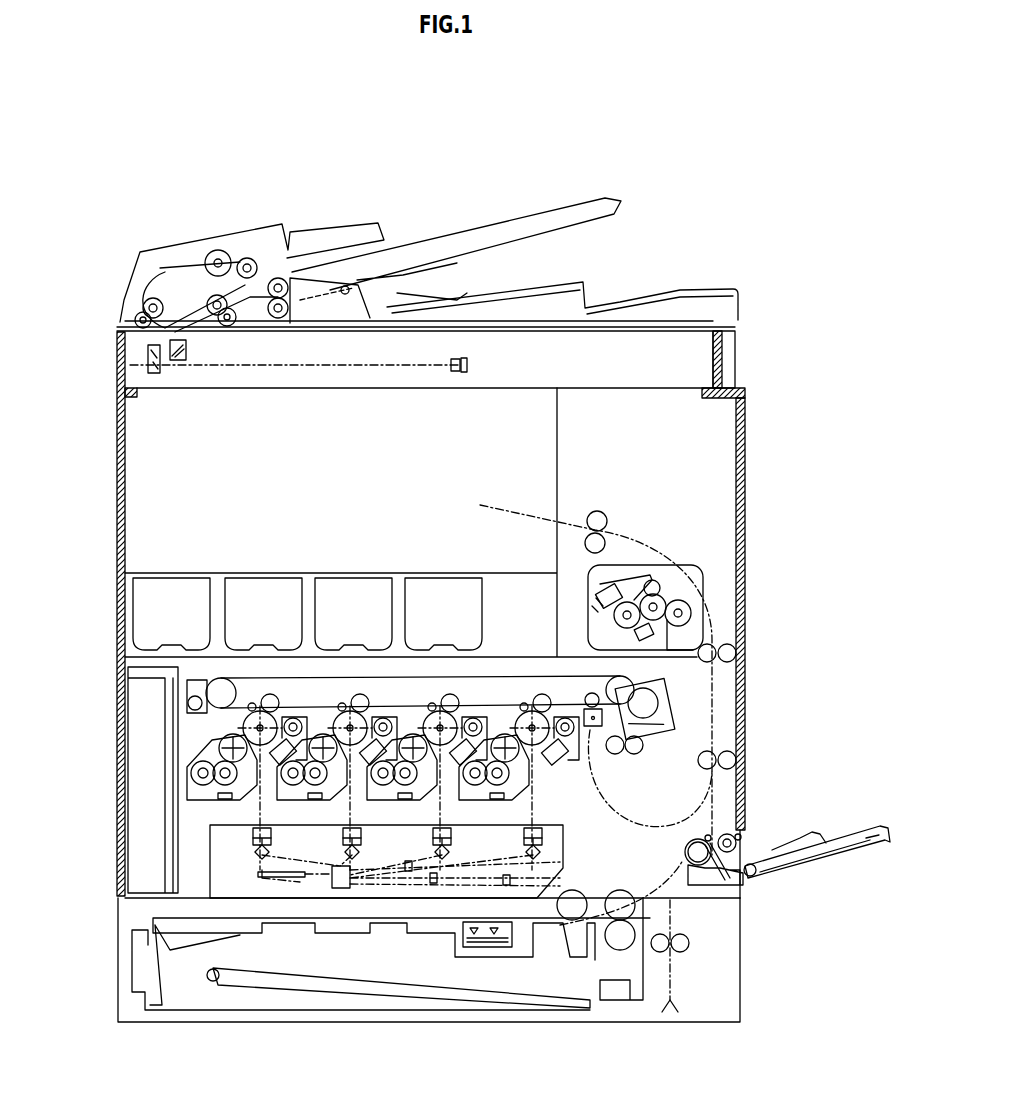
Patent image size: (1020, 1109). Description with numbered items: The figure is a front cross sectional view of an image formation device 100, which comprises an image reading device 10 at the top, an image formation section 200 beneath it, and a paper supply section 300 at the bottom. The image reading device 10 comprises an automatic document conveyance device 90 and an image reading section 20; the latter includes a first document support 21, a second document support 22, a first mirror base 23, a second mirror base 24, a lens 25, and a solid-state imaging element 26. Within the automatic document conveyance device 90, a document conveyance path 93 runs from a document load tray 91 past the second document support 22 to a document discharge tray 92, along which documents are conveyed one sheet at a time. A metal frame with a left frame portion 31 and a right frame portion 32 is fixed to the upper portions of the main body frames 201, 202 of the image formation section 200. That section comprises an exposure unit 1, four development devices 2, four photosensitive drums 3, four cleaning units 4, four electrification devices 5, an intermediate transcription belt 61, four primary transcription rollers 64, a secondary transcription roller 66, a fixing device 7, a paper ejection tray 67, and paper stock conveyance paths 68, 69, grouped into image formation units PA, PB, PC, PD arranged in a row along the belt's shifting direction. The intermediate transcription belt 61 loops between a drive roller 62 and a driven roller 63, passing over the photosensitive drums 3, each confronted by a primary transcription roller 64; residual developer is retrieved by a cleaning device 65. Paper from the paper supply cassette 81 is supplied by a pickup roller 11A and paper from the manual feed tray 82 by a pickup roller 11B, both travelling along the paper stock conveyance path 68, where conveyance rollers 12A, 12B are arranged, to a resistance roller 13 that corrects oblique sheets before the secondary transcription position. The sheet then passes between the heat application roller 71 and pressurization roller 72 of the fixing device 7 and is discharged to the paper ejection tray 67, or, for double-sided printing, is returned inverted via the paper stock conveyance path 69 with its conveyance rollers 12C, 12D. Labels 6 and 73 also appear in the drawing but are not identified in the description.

The image formation device 100 is at (769, 205).
The image reading device 10 is at (112, 205).
The automatic document conveyance device 90 is at (238, 224).
The document load tray 91 is at (462, 218).
The document discharge tray 92 is at (562, 283).
The document conveyance path 93 is at (137, 300).
The image reading section 20 is at (712, 363).
The first document support 21 is at (548, 334).
The second document support 22 is at (190, 340).
The first mirror base 23 is at (178, 360).
The second mirror base 24 is at (160, 373).
The lens 25 is at (450, 365).
The solid-state imaging element 26 is at (463, 372).
The left frame portion 31 is at (127, 367).
The right frame portion 32 is at (722, 350).
The image formation section 200 is at (112, 395).
The main body frame 201 is at (125, 504).
The main body frame 202 is at (745, 440).
The paper supply section 300 is at (114, 905).
The paper ejection tray 67 is at (352, 577).
The image formation unit PD is at (273, 667).
The image formation unit PC is at (330, 687).
The image formation unit PB is at (420, 689).
The image formation unit PA is at (518, 682).
The intermediate transfer belt 6 is at (505, 671).
The intermediate transcription belt 61 is at (518, 680).
The drive roller 62 is at (634, 690).
The driven roller 63 is at (228, 680).
The cleaning device 65 is at (198, 678).
The development device 2 is at (220, 747).
The photosensitive drum 3 is at (258, 712).
The primary transcription roller 64 is at (272, 700).
The cleaning unit 4 is at (298, 721).
The electrification device 5 is at (268, 763).
The exposure unit 1 is at (565, 845).
The paper stock conveyance path 68 is at (612, 795).
The fixing device 7 is at (703, 585).
The heat application roller 71 is at (665, 600).
The pressurization roller 72 is at (680, 613).
The heater 73 is at (638, 588).
The conveyance roller 12B is at (598, 510).
The conveyance roller 12C is at (740, 652).
The conveyance roller 12D is at (740, 760).
The conveyance roller 12A is at (733, 836).
The paper stock conveyance path 69 is at (718, 698).
The secondary transcription roller 66 is at (650, 705).
The resistance roller 13 is at (643, 745).
The pickup roller 11A is at (572, 892).
The pickup roller 11B is at (748, 850).
The manual feed tray 82 is at (825, 830).
The paper supply cassette 81 is at (372, 975).